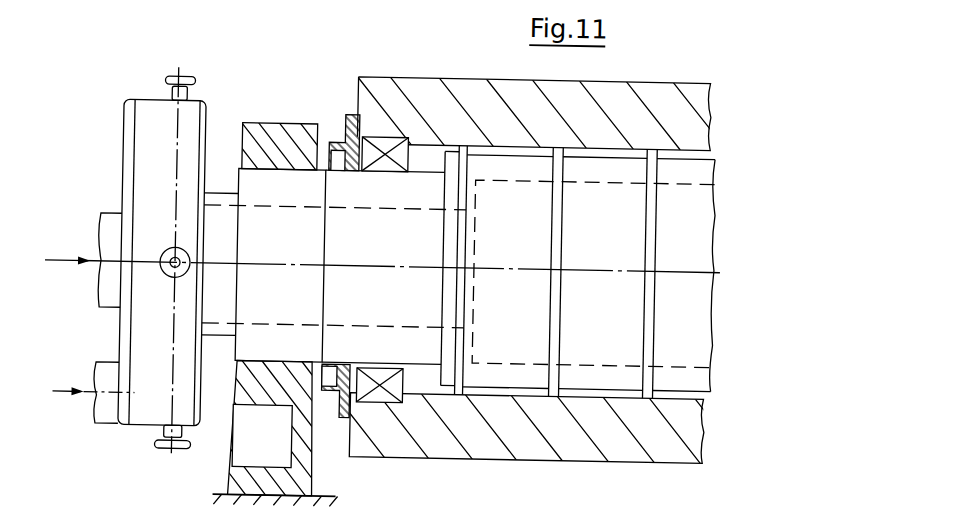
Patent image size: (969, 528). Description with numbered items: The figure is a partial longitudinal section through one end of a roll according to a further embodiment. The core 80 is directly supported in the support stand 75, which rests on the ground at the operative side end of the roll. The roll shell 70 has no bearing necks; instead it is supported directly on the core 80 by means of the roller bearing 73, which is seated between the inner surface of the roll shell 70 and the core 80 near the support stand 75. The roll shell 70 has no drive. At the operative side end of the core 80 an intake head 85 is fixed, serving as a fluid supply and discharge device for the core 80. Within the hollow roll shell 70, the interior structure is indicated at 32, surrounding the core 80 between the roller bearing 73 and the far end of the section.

The intake head 85 is at (197, 116).
The support stand 75 is at (307, 459).
The roll shell 70 is at (432, 92).
The roller bearing 73 is at (379, 136).
The core 80 is at (611, 230).
The ribs 32 is at (648, 332).